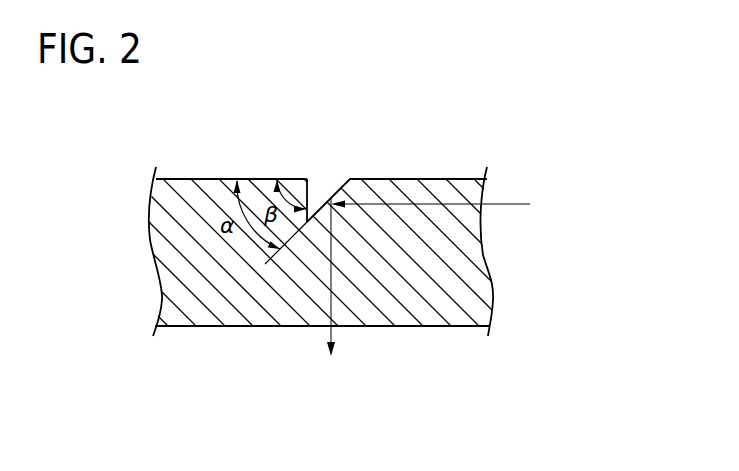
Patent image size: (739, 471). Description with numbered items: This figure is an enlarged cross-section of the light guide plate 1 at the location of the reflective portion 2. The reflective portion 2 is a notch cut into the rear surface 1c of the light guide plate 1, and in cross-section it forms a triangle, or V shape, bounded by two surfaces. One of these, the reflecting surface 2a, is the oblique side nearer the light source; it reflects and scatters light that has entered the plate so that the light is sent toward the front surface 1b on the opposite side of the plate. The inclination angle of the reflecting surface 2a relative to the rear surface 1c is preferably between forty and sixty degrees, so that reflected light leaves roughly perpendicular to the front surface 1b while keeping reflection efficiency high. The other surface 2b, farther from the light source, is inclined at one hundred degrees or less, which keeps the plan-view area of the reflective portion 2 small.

The light guide plate 1 is at (463, 178).
The front surface 1b is at (460, 329).
The rear surface 1c is at (437, 178).
The reflective portion 2 is at (306, 154).
The reflecting surface 2a is at (335, 186).
The surface farther from the light source 2b is at (314, 178).